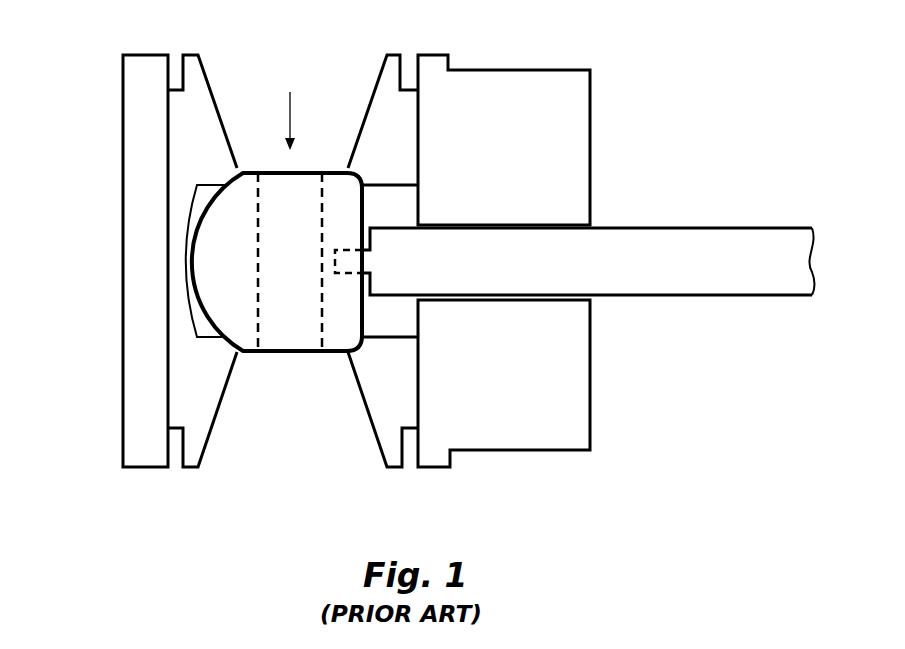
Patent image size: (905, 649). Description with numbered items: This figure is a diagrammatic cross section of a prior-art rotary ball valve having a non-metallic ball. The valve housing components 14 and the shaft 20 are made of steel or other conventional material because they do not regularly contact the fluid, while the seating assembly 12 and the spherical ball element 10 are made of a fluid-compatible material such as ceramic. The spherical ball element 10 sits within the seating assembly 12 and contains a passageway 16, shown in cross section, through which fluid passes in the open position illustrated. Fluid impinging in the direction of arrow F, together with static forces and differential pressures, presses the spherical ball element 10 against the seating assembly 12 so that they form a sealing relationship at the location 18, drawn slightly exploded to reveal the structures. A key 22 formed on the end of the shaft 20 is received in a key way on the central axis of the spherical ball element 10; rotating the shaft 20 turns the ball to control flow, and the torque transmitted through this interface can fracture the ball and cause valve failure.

The spherical ball element 10 is at (222, 246).
The seating assembly 12 is at (195, 103).
The valve housing components 14 is at (145, 387).
The passageway 16 is at (323, 316).
The sealing location 18 is at (345, 170).
The shaft 20 is at (682, 270).
The key 22 is at (345, 258).